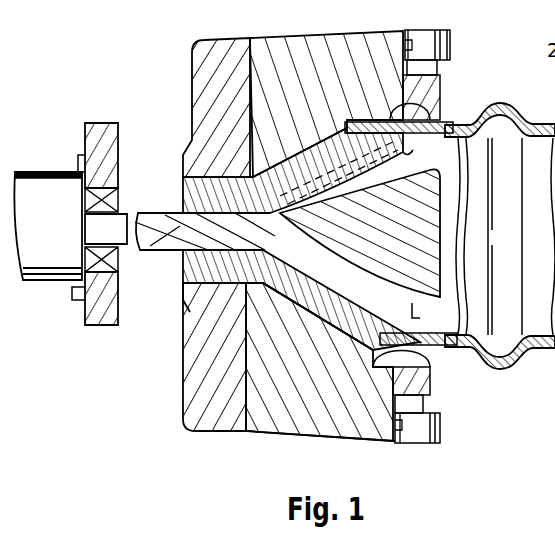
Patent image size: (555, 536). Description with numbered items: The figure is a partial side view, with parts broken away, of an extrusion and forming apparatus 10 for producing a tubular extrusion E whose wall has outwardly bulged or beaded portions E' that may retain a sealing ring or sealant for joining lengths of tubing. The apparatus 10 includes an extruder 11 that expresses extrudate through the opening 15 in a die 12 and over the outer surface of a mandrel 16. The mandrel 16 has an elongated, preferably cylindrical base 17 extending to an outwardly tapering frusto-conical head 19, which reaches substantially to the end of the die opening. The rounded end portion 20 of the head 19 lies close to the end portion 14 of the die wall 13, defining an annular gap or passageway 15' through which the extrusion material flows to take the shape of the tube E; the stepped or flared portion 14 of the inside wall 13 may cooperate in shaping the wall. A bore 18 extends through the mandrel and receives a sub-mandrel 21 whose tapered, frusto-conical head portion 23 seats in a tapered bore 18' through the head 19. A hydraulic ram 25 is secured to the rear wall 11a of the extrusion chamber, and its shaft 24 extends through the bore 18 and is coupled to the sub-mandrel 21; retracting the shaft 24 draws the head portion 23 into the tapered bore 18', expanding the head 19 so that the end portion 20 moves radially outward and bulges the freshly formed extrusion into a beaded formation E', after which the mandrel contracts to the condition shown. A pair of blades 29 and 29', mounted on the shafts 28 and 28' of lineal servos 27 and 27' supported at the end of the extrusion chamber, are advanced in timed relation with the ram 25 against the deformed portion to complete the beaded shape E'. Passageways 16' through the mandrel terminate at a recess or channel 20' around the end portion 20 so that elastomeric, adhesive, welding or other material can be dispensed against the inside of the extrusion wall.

The extrusion and forming apparatus 10 is at (82, 76).
The extruder 11 is at (190, 74).
The rear wall 11a is at (86, 306).
The die 12 is at (292, 432).
The die wall 13 is at (185, 313).
The end portion of the die wall 14 is at (433, 103).
The opening 15 is at (319, 362).
The annular gap or passageway 15' is at (319, 336).
The mandrel 16 is at (203, 245).
The passageways 16' is at (426, 153).
The base 17 is at (188, 250).
The bore 18 is at (265, 170).
The tapered bore 18' is at (301, 300).
The head 19 is at (330, 188).
The end portion 20 is at (421, 364).
The recess or channel 20' is at (433, 313).
The sub-mandrel 21 is at (165, 233).
The head portion 23 is at (360, 233).
The shaft 24 is at (118, 242).
The hydraulic ram 25 is at (58, 231).
The lineal servo 27 is at (443, 42).
The lineal servo 27' is at (437, 441).
The shaft 28 is at (455, 45).
The shaft 28' is at (437, 424).
The blade 29 is at (441, 73).
The blade 29' is at (440, 396).
The beaded formations E' is at (500, 198).
The extrusion E is at (500, 368).